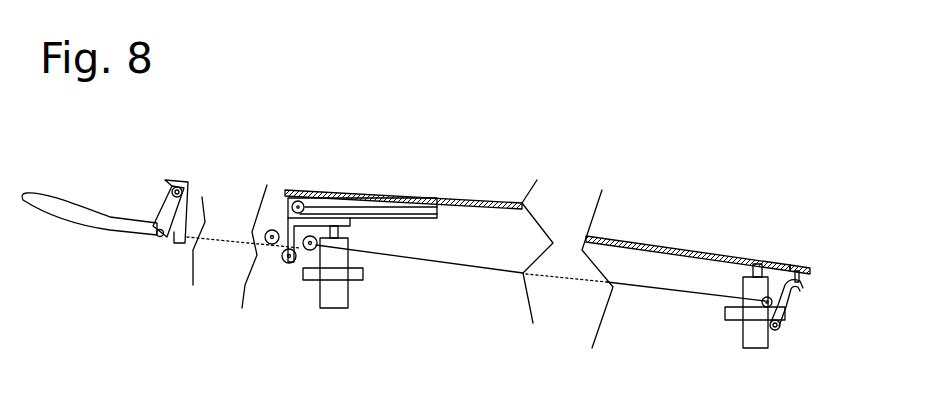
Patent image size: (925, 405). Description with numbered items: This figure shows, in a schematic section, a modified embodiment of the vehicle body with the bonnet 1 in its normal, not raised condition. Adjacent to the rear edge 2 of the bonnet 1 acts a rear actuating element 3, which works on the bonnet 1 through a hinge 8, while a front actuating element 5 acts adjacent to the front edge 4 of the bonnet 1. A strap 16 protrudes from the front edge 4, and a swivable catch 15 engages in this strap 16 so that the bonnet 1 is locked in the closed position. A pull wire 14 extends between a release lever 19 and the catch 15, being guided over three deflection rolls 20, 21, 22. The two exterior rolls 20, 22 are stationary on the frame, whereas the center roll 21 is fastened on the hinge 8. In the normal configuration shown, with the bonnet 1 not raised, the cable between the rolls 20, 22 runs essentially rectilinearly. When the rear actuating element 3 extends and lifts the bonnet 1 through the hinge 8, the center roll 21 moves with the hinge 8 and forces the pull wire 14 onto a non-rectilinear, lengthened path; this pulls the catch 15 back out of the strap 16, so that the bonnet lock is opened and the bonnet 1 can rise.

The bonnet 1 is at (500, 200).
The rear edge 2 is at (287, 192).
The actuating element 3 is at (338, 293).
The front edge 4 is at (815, 270).
The actuating element 5 is at (747, 333).
The hinge 8 is at (298, 200).
The pull wire 14 is at (453, 268).
The catch 15 is at (787, 300).
The strap 16 is at (800, 279).
The release lever 19 is at (107, 235).
The deflection roll 20 is at (268, 231).
The deflection roll 21 is at (283, 262).
The deflection roll 22 is at (306, 250).